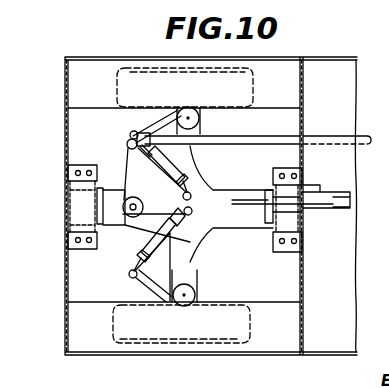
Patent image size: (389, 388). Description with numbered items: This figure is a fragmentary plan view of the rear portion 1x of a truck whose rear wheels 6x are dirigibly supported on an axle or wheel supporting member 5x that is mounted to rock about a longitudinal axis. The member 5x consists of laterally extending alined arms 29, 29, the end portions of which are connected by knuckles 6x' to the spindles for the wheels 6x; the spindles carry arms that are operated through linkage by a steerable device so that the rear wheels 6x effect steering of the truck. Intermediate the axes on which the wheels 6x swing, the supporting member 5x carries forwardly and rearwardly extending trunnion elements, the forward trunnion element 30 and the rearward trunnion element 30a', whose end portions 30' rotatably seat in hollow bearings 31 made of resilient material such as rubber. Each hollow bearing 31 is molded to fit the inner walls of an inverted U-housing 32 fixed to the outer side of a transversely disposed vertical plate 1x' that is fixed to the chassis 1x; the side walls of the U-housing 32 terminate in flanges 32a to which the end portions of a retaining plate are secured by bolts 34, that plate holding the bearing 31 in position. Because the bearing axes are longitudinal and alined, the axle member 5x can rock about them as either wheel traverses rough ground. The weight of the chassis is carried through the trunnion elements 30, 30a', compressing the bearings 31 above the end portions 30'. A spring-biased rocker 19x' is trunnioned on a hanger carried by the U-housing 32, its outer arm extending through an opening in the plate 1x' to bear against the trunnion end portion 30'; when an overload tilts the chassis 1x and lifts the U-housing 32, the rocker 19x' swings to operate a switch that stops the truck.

The rear portion of the truck 1x is at (211, 221).
The transversely disposed vertical plate 1x' is at (330, 206).
The axle or wheel supporting member 5x is at (238, 174).
The rear wheels 6x is at (179, 66).
The knuckles 6x' is at (181, 213).
The rocker 19x' is at (273, 195).
The laterally extending alined arms 29 is at (204, 122).
The trunnion element 30 is at (261, 204).
The end portion of trunnion element 30' is at (103, 211).
The bell crank lever 30a' is at (138, 223).
The hollow bearings 31 is at (68, 189).
The inverted U-housing 32 is at (68, 240).
The flanges 32a is at (296, 168).
The bolts 34 is at (296, 251).